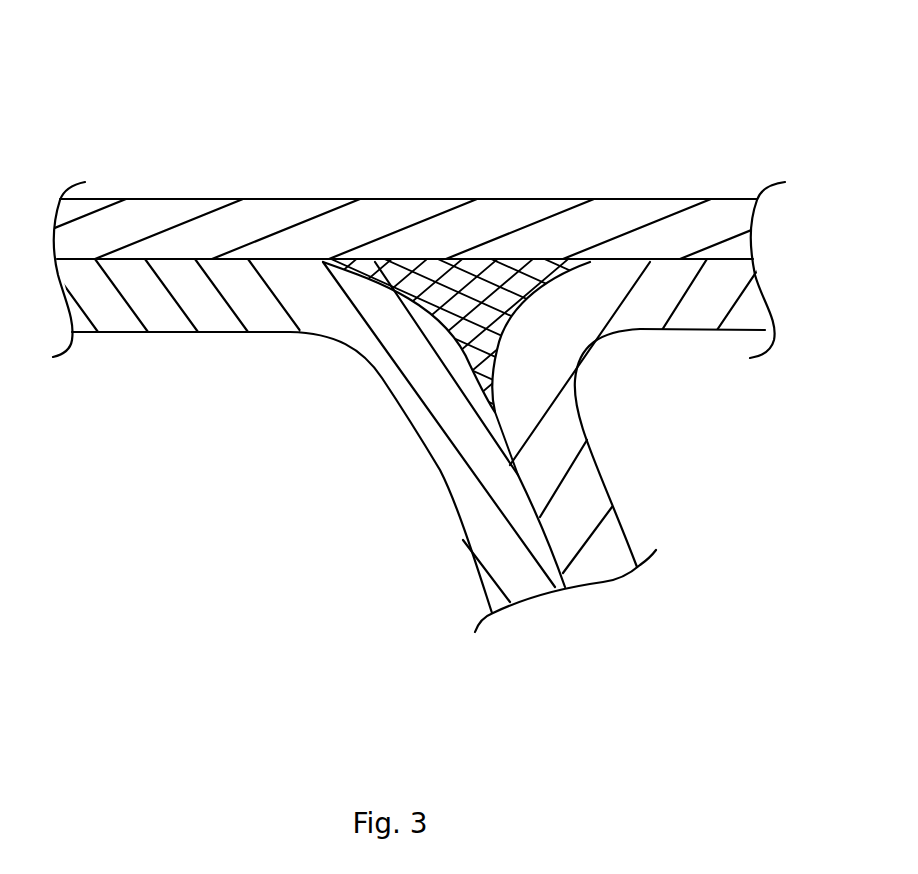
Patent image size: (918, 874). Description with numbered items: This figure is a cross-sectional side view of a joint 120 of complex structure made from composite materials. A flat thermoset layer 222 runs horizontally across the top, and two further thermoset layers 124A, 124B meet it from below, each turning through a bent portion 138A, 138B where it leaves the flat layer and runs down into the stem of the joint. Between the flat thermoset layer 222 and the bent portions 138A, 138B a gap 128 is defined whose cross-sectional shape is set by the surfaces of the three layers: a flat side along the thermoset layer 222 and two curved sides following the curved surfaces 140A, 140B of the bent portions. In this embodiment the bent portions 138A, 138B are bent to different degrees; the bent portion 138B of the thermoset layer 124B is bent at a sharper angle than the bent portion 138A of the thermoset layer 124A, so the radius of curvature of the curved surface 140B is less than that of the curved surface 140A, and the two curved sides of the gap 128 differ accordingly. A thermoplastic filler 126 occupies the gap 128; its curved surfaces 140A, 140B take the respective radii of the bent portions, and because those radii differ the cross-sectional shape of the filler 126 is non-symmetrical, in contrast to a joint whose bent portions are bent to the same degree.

The joint 120 is at (546, 148).
The thermoset layer 222 is at (375, 198).
The gap 128 is at (497, 278).
The thermoset layer 124A is at (444, 480).
The thermoset layer 124B is at (606, 466).
The bent portion 138A is at (403, 350).
The bent portion 138B is at (562, 347).
The thermoplastic filler 126 is at (447, 294).
The curved surface 140A is at (413, 270).
The curved surface 140B is at (510, 312).